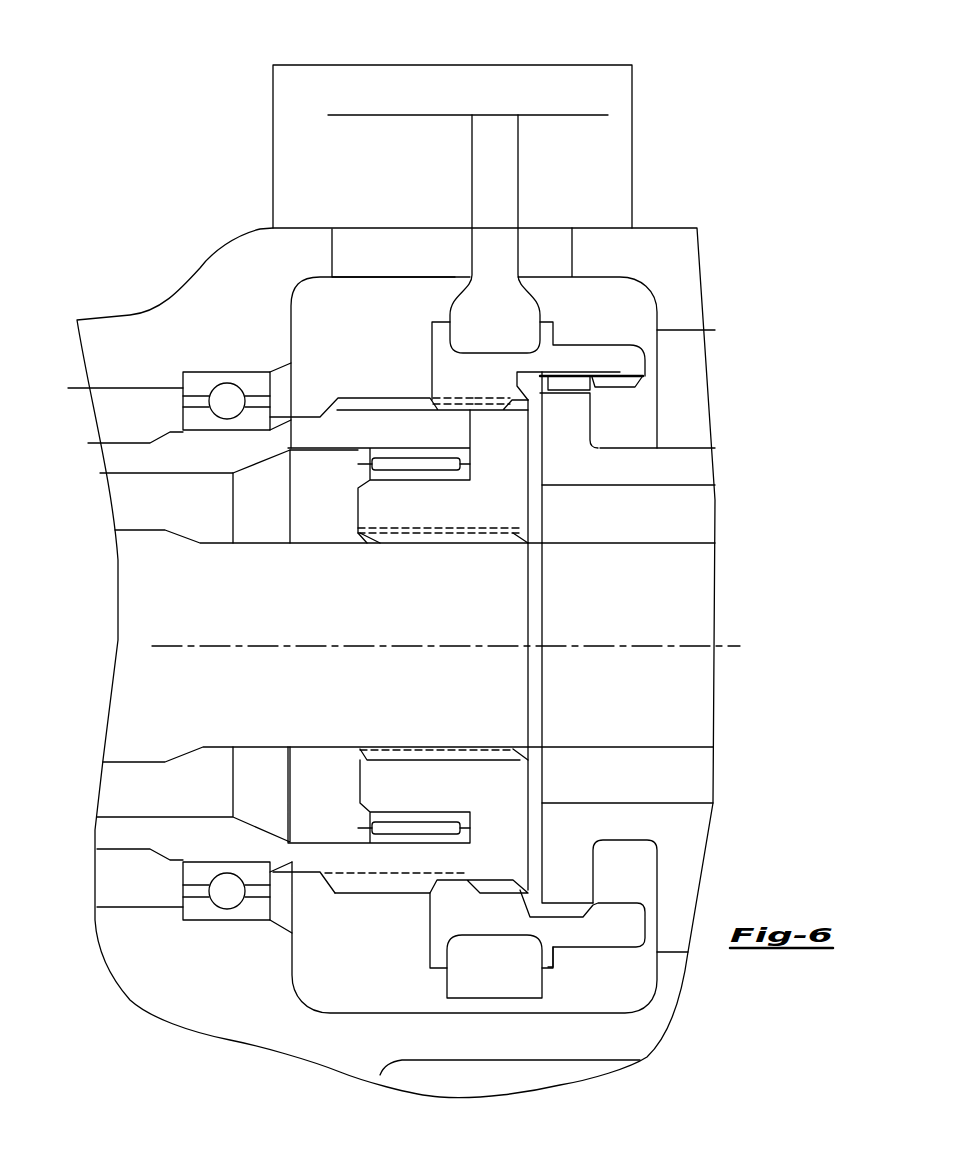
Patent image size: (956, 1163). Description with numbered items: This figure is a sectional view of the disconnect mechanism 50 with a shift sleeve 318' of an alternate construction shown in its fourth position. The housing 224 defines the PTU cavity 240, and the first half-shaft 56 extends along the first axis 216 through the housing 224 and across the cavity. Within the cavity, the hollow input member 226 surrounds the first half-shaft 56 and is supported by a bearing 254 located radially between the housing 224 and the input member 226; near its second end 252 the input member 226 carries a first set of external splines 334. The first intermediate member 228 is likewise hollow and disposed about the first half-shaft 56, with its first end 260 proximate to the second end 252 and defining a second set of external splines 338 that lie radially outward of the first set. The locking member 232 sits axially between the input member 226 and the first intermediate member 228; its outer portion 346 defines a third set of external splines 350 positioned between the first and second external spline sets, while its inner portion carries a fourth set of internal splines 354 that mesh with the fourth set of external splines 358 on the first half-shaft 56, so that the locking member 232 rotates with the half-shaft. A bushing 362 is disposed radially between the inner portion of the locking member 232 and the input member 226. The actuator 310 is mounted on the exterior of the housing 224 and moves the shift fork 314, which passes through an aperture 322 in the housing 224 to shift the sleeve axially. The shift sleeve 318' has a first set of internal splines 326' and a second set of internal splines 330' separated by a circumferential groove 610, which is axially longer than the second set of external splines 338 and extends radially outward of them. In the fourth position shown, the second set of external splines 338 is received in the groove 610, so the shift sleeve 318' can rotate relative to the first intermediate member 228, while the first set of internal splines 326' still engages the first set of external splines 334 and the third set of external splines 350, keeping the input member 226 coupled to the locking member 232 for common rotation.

The disconnect mechanism 50 is at (603, 60).
The first half-shaft 56 is at (160, 598).
The first axis 216 is at (247, 650).
The housing 224 is at (100, 330).
The input member 226 is at (135, 452).
The first intermediate member 228 is at (697, 470).
The locking member 232 is at (478, 515).
The PTU cavity 240 is at (625, 303).
The second end 252 is at (540, 427).
The bearing 254 is at (228, 410).
The first end 260 is at (548, 448).
The actuator 310 is at (273, 100).
The shift fork 314 is at (487, 170).
The shift sleeve 318' is at (482, 347).
The aperture 322 is at (572, 250).
The first set of internal splines 326' is at (421, 377).
The second set of internal splines 330' is at (688, 394).
The first set of external splines 334 is at (357, 408).
The second set of external splines 338 is at (578, 376).
The outer portion 346 is at (545, 520).
The third set of external splines 350 is at (515, 405).
The fourth set of internal splines 354 is at (455, 530).
The fourth set of external splines 358 is at (412, 748).
The bushing 362 is at (392, 462).
The groove 610 is at (540, 372).